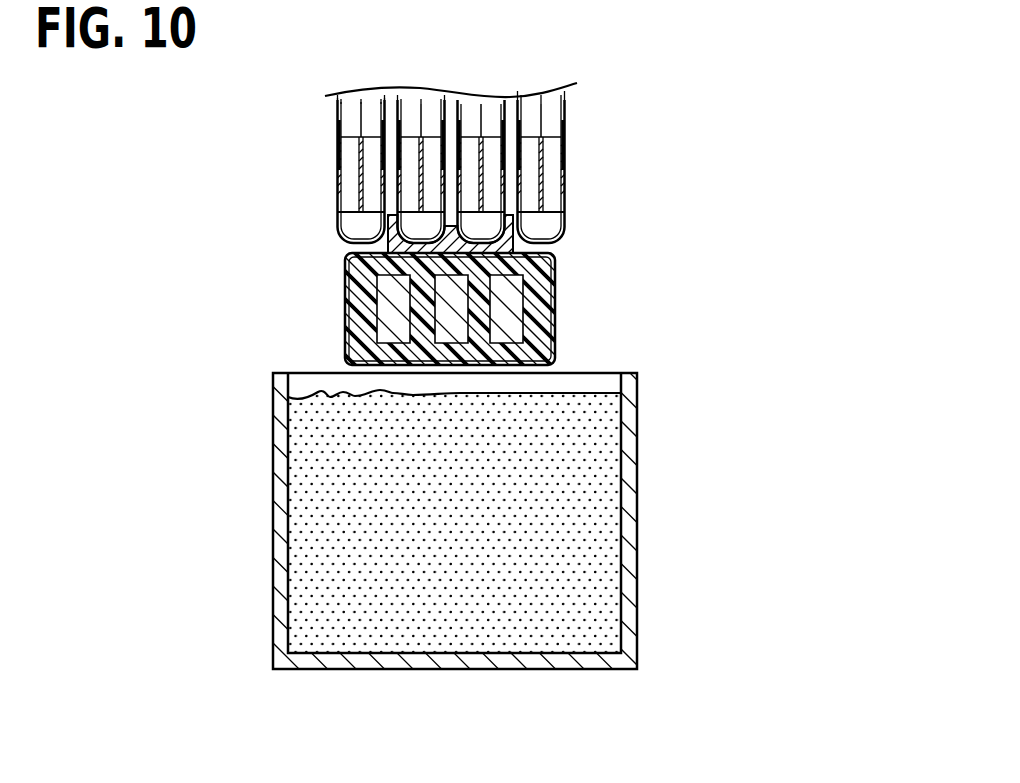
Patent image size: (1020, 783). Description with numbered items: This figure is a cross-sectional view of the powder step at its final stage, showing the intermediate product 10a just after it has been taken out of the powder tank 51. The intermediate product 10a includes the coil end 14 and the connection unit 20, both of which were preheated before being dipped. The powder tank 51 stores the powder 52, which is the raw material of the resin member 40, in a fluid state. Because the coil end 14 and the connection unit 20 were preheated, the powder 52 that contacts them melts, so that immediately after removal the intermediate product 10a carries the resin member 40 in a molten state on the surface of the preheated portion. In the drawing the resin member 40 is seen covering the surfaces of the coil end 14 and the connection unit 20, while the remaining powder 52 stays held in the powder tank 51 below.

The intermediate product 10a is at (528, 155).
The coil end 14 is at (583, 171).
The resin member 40 is at (574, 251).
The connection unit 20 is at (583, 311).
The powder 52 is at (598, 440).
The powder tank 51 is at (637, 507).